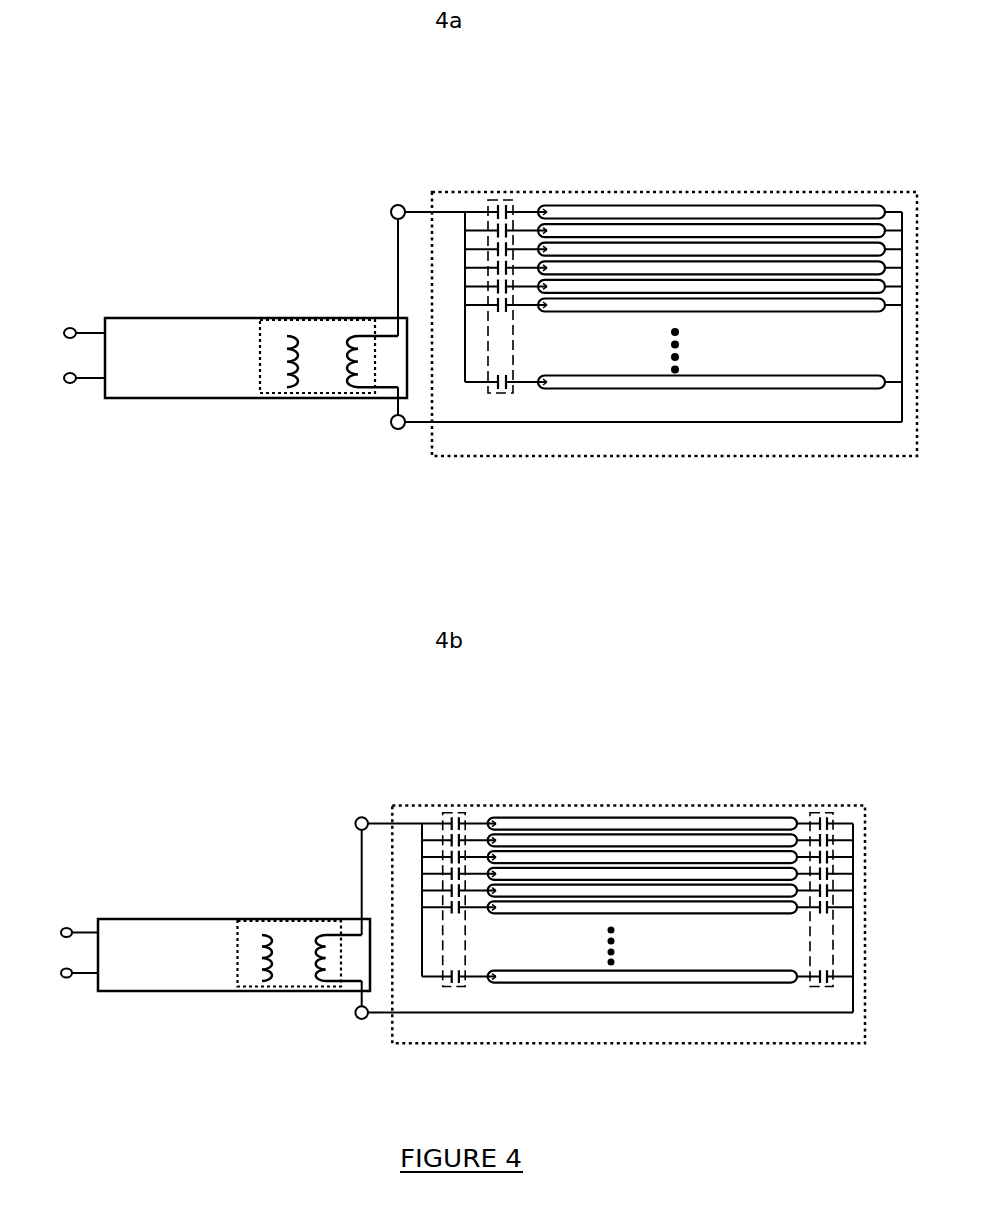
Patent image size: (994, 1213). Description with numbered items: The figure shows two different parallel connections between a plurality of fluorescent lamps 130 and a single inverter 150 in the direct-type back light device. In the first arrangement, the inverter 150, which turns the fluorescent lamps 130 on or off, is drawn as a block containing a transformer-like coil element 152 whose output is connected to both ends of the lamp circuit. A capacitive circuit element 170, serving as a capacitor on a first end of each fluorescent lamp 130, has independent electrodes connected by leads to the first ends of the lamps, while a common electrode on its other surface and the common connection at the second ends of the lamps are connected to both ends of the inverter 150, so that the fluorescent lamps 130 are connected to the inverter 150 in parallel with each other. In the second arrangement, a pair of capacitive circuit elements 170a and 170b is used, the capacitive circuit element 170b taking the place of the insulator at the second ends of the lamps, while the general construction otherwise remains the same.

In FIG. 4a, the inverter 150 is at (156, 311).
In FIG. 4b, the inverter 150 is at (144, 910).
In FIG. 4a, the transformer 152 is at (260, 338).
In FIG. 4b, the transformer 152 is at (238, 923).
In FIG. 4a, the capacitive circuit element 170 is at (508, 182).
In FIG. 4b, the capacitive circuit element 170a is at (457, 813).
In FIG. 4b, the capacitive circuit element 170b is at (830, 803).
In FIG. 4a, the fluorescent lamps 130 is at (810, 212).
In FIG. 4b, the fluorescent lamps 130 is at (733, 823).